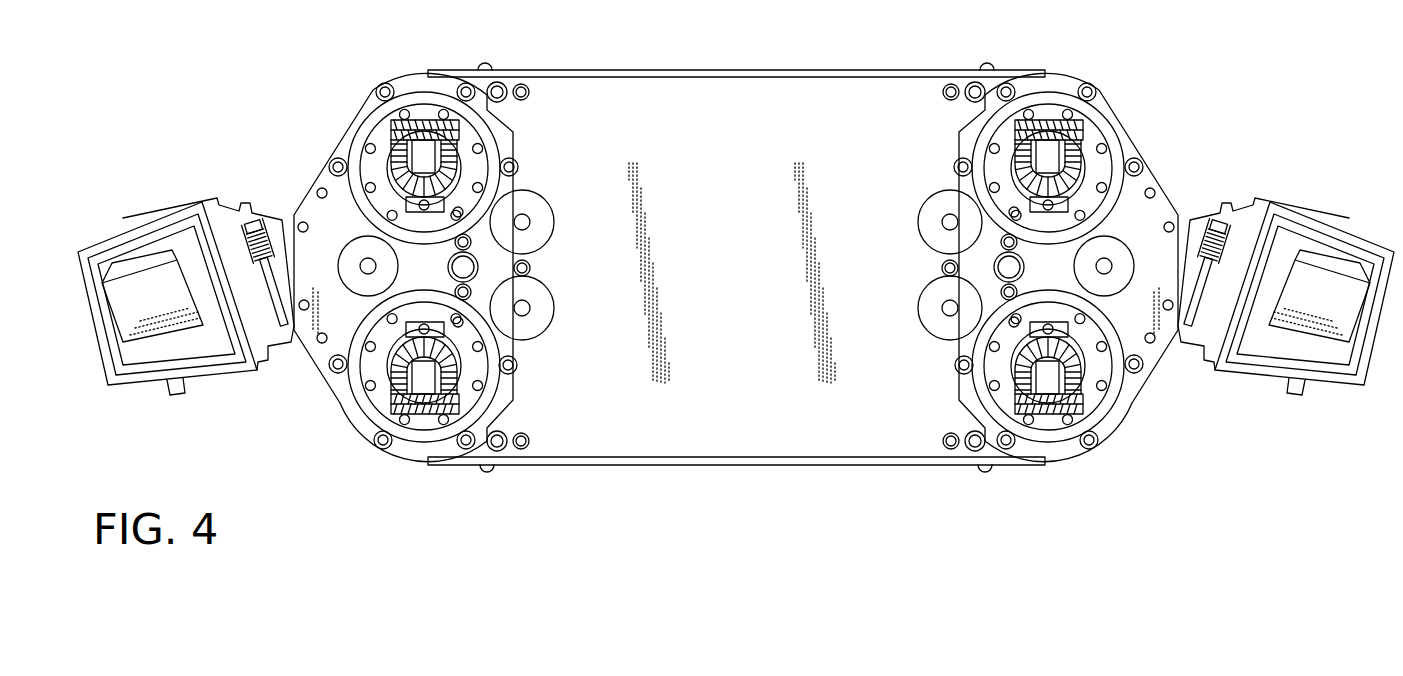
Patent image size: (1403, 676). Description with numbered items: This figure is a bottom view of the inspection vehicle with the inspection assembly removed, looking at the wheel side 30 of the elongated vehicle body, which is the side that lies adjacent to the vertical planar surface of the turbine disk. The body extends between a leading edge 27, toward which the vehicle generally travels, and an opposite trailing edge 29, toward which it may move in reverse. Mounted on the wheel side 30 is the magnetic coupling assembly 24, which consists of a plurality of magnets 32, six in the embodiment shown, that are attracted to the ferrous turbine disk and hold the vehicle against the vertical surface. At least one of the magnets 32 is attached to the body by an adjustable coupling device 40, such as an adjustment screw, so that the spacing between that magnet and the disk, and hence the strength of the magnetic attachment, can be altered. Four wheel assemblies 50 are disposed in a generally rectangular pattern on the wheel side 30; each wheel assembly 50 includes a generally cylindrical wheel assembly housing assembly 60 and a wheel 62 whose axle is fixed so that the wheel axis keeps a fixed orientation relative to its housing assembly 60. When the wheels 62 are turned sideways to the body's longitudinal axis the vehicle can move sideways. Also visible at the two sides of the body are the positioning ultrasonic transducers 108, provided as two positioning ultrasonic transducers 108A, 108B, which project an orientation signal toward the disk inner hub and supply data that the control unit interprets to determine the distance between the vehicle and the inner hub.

The magnetic coupling assembly 24 is at (920, 307).
The leading edge 27 is at (1180, 207).
The trailing edge 29 is at (293, 214).
The wheel side 30 is at (723, 442).
The magnet 32 is at (347, 245).
The adjustable coupling device 40 is at (528, 222).
The wheel assembly 50 is at (370, 116).
The wheel assembly housing assembly 60 is at (495, 132).
The wheel 62 is at (421, 118).
The positioning ultrasonic transducer 108 is at (163, 158).
The positioning ultrasonic transducer 108A is at (1327, 290).
The positioning ultrasonic transducer 108B is at (172, 314).